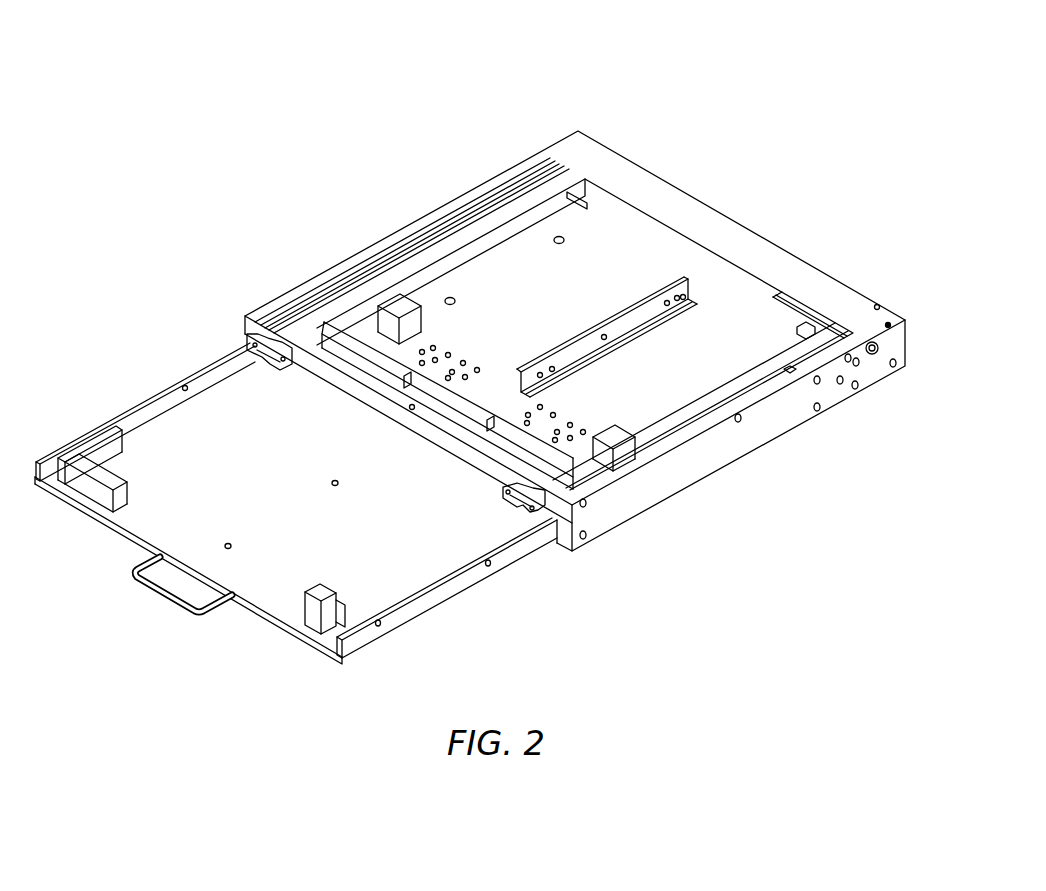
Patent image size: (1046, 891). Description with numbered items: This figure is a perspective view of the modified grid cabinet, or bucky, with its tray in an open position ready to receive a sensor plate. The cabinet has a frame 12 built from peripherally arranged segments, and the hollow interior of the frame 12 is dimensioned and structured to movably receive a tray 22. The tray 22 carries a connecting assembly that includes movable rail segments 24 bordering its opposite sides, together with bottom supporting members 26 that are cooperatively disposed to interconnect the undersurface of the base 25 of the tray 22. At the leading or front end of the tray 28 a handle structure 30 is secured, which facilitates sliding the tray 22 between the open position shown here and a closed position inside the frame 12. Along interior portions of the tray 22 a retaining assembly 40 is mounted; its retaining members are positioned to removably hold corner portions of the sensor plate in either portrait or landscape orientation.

The frame 12 is at (468, 188).
The tray 22 is at (460, 595).
The movable rail segments 24 is at (247, 343).
The base 25 is at (243, 478).
The bottom supporting member 26 is at (677, 277).
The leading or front side or end of the tray 28 is at (240, 608).
The handle structure 30 is at (172, 605).
The retaining assembly 40 is at (393, 307).